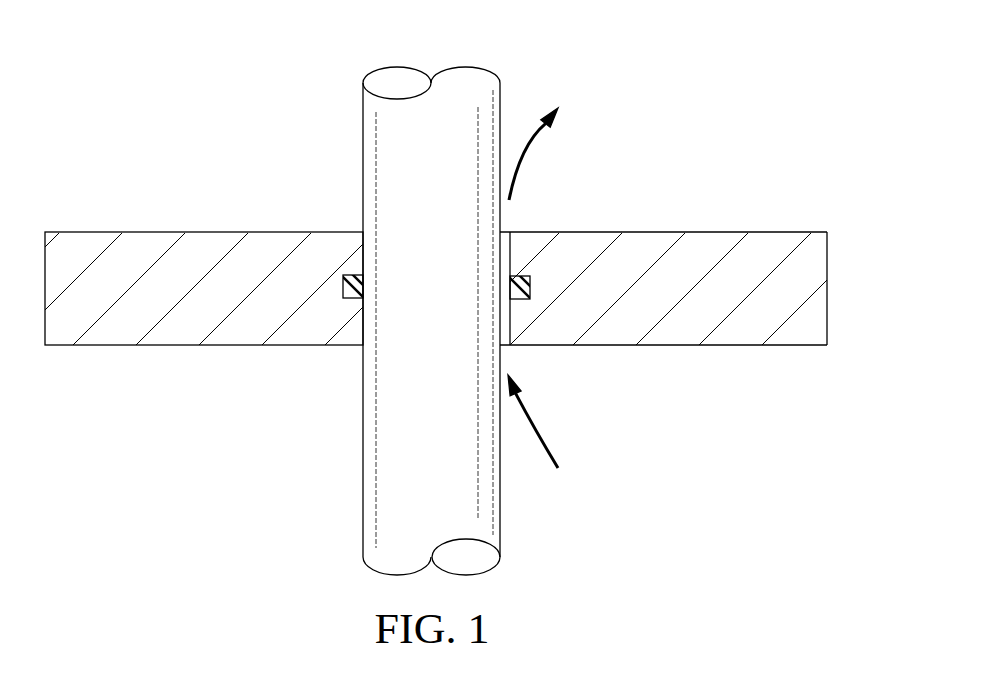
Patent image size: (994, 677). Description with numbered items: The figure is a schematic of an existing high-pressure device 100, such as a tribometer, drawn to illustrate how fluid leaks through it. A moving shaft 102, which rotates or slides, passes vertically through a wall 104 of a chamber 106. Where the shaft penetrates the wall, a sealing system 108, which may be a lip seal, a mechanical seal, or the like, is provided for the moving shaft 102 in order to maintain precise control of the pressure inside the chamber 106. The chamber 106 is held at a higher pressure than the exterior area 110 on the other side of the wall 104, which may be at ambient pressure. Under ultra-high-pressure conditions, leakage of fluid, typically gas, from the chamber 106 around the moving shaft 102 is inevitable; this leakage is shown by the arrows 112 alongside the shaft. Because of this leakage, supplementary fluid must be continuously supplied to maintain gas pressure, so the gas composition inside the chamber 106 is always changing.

The device 100 is at (678, 58).
The moving shaft 102 is at (363, 168).
The wall 104 is at (708, 242).
The chamber 106 is at (210, 478).
The sealing system 108 is at (365, 293).
The exterior area 110 is at (210, 130).
The arrows 112 is at (530, 147).